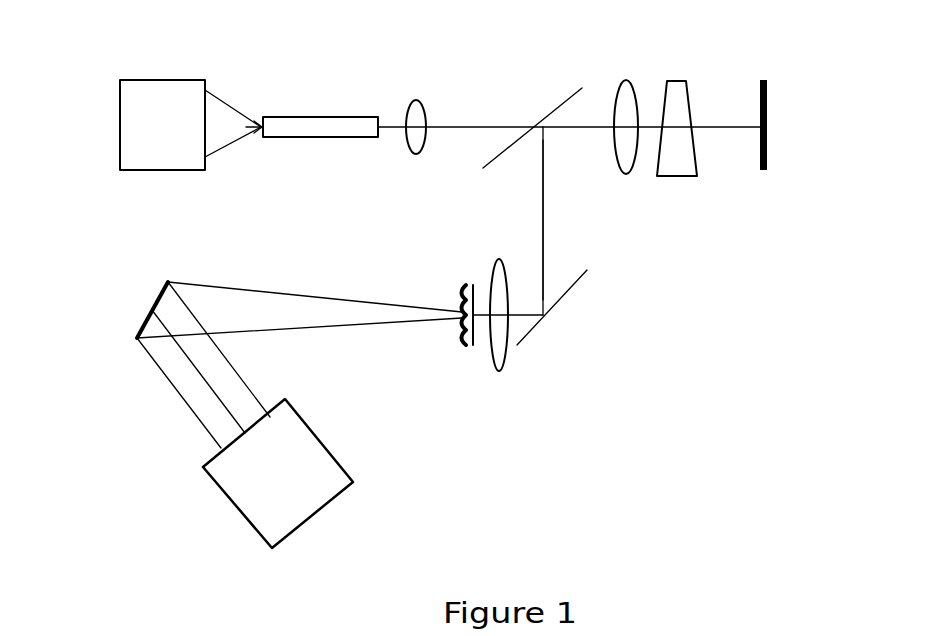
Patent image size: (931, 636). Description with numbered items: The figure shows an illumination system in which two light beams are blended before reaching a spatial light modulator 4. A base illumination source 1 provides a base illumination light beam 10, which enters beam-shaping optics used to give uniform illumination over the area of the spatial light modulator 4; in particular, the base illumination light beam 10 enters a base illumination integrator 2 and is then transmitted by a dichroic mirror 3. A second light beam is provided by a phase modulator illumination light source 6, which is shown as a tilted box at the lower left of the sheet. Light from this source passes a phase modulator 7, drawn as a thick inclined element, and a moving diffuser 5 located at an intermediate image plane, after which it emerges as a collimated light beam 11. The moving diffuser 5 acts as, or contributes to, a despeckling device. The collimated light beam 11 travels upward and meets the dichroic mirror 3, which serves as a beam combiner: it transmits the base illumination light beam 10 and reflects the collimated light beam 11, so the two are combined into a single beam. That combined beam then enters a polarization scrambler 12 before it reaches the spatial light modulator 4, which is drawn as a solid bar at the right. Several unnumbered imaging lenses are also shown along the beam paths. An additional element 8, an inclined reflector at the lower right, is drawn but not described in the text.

The base illumination source 1 is at (120, 115).
The base illumination light beam 10 is at (248, 126).
The base illumination integrator 2 is at (330, 117).
The dichroic mirror 3 is at (535, 127).
The spatial light modulator 4 is at (757, 165).
The polarization scrambler 12 is at (682, 178).
The collimated light beam 11 is at (544, 230).
The mirror 8 is at (556, 303).
The moving diffuser 5 is at (467, 282).
The phase modulator 7 is at (143, 320).
The phase modulator illumination light source 6 is at (325, 507).